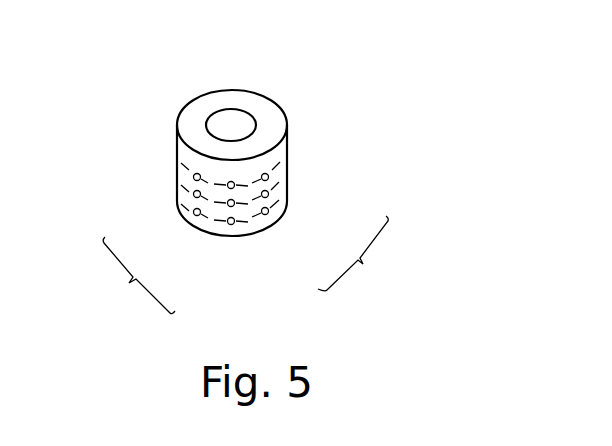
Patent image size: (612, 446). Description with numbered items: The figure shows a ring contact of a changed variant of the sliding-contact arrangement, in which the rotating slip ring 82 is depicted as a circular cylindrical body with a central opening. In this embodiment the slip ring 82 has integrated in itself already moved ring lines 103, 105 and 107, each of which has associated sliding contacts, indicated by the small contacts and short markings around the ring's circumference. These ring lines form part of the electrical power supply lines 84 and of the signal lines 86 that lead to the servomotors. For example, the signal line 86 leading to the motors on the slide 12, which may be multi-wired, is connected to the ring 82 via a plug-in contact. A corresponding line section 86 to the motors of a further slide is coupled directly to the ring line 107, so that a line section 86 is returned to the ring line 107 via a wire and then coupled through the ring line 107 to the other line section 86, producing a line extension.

The slip ring 82 is at (237, 105).
The ring line 107 is at (176, 166).
The ring line 105 is at (176, 188).
The ring line 103 is at (176, 207).
The signal line 86 is at (196, 194).
The electrical power supply line 84 is at (230, 205).
The slide 12 is at (355, 254).